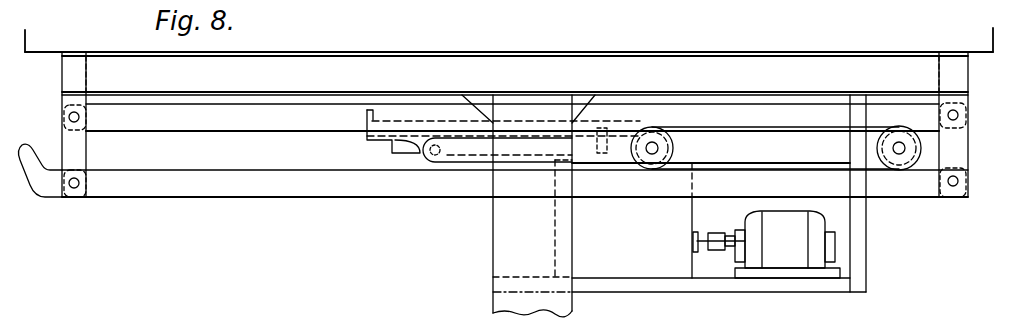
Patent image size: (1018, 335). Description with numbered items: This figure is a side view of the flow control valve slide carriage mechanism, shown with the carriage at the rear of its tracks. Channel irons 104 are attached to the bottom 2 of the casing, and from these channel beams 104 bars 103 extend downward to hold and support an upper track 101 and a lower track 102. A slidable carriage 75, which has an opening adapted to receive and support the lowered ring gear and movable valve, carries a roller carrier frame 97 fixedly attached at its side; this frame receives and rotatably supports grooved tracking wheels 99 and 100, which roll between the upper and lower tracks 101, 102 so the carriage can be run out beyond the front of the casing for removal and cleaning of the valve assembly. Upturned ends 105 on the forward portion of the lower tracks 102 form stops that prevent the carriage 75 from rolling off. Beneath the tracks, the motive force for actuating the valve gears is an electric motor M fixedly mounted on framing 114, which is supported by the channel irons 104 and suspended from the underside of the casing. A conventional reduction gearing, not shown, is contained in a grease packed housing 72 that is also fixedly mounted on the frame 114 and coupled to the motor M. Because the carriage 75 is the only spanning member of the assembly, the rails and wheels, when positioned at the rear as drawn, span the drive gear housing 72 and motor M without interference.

The bottom of the casing 2 is at (41, 52).
The channel irons 104 is at (282, 46).
The upper track 101 is at (236, 124).
The lower track 102 is at (300, 158).
The bars 103 is at (87, 148).
The upturned ends 105 is at (44, 158).
The grease packed housing 72 is at (555, 206).
The slidable carriage 75 is at (603, 128).
The grooved tracking wheel 99 is at (657, 128).
The grooved tracking wheel 100 is at (922, 131).
The roller carrier frame 97 is at (775, 148).
The framing 114 is at (670, 289).
The electric motor M is at (766, 244).